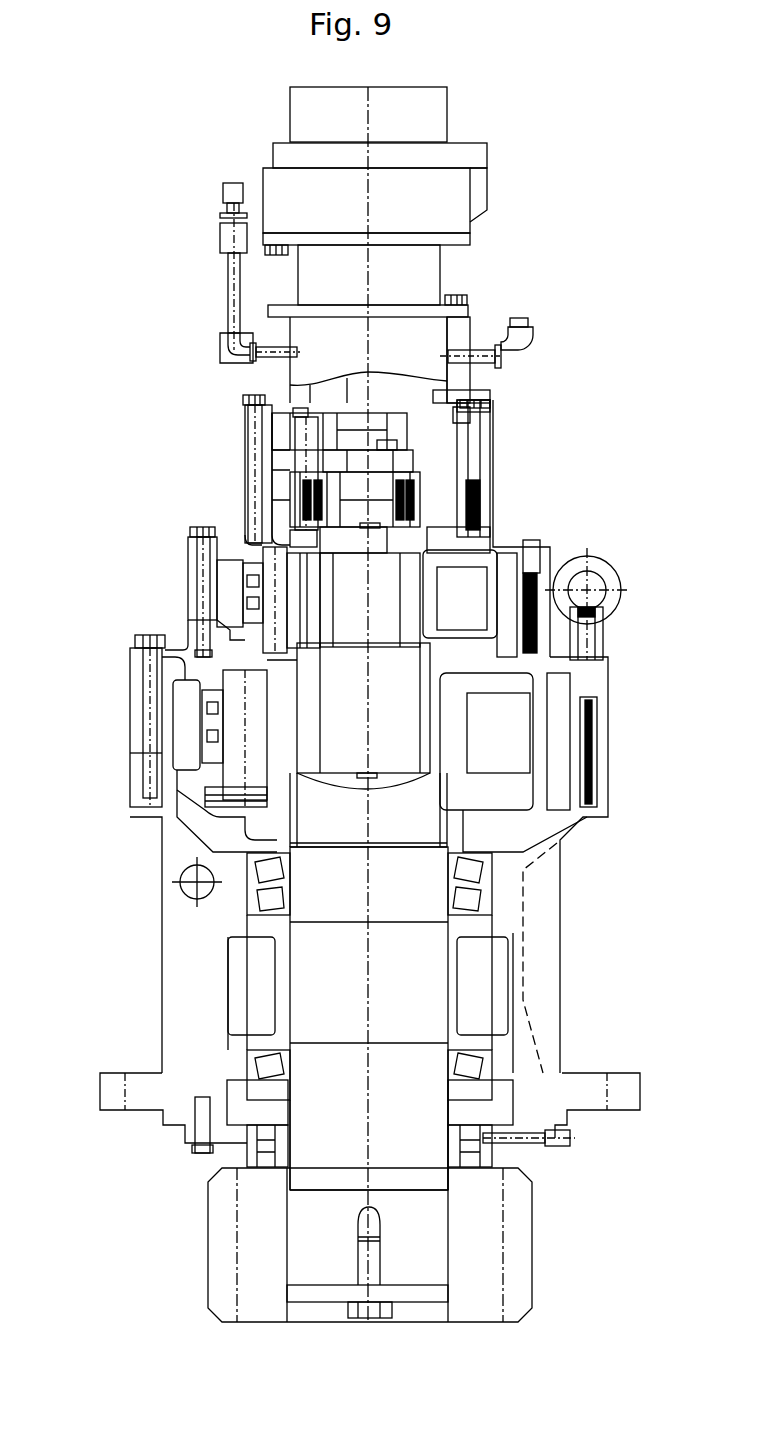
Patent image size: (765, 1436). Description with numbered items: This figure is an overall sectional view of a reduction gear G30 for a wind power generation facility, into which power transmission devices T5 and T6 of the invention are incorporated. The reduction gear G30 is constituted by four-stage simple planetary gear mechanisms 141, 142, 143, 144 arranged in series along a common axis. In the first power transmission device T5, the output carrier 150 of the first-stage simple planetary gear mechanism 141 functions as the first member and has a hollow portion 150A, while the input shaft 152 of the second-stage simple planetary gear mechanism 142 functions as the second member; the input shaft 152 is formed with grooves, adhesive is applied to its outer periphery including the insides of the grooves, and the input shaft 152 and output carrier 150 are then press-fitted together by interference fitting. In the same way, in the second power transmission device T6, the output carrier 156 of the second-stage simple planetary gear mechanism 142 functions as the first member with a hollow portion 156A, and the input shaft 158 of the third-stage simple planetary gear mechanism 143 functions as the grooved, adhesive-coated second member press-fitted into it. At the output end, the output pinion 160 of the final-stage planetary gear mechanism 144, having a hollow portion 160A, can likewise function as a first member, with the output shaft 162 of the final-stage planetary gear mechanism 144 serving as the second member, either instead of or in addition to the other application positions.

The first-stage simple planetary gear mechanism 141 is at (222, 420).
The second-stage simple planetary gear mechanism 142 is at (222, 497).
The third-stage simple planetary gear mechanism 143 is at (170, 595).
The final-stage planetary gear mechanism 144 is at (115, 730).
The output carrier 150 is at (450, 440).
The hollow portion 150A is at (380, 462).
The input shaft 152 is at (413, 468).
The output carrier 156 is at (430, 503).
The hollow portion 156A is at (410, 557).
The input shaft 158 is at (360, 555).
The output pinion 160 is at (517, 1250).
The hollow portion 160A is at (448, 1270).
The output shaft 162 is at (425, 995).
The power transmission device T5 is at (393, 458).
The power transmission device T6 is at (400, 540).
The reduction gear G30 is at (588, 268).